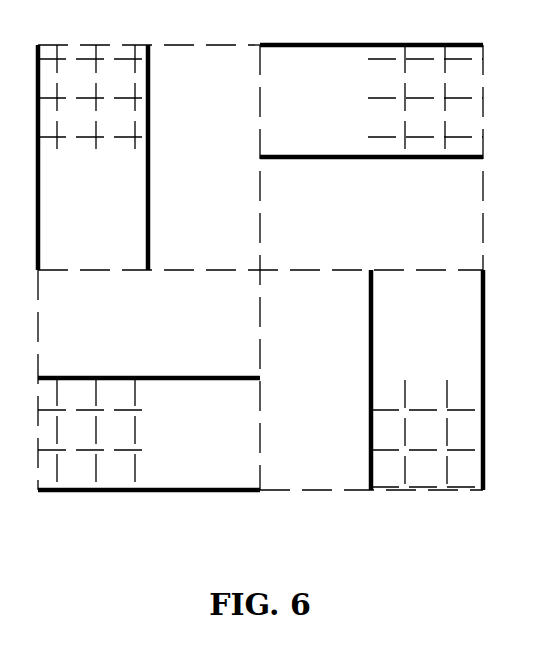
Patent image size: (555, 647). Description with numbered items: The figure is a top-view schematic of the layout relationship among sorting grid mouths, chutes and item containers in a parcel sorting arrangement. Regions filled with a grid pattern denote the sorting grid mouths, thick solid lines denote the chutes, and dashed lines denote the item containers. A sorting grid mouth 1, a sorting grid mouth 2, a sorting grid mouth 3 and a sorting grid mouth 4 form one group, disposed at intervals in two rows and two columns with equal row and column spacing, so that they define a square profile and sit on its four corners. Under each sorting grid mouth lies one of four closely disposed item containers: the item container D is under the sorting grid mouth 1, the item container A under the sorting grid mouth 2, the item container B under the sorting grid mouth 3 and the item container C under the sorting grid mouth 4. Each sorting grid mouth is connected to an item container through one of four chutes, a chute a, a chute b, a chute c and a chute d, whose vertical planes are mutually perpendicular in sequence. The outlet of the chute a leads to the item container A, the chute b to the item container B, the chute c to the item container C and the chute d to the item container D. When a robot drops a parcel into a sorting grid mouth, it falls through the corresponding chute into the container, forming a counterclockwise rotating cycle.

The sorting grid mouth 1 is at (93, 101).
The sorting grid mouth 2 is at (94, 434).
The sorting grid mouth 3 is at (427, 435).
The sorting grid mouth 4 is at (425, 98).
The item container A is at (149, 507).
The item container B is at (493, 380).
The item container C is at (371, 33).
The item container D is at (25, 157).
The chute a is at (93, 174).
The chute b is at (162, 434).
The chute c is at (427, 364).
The chute d is at (353, 101).